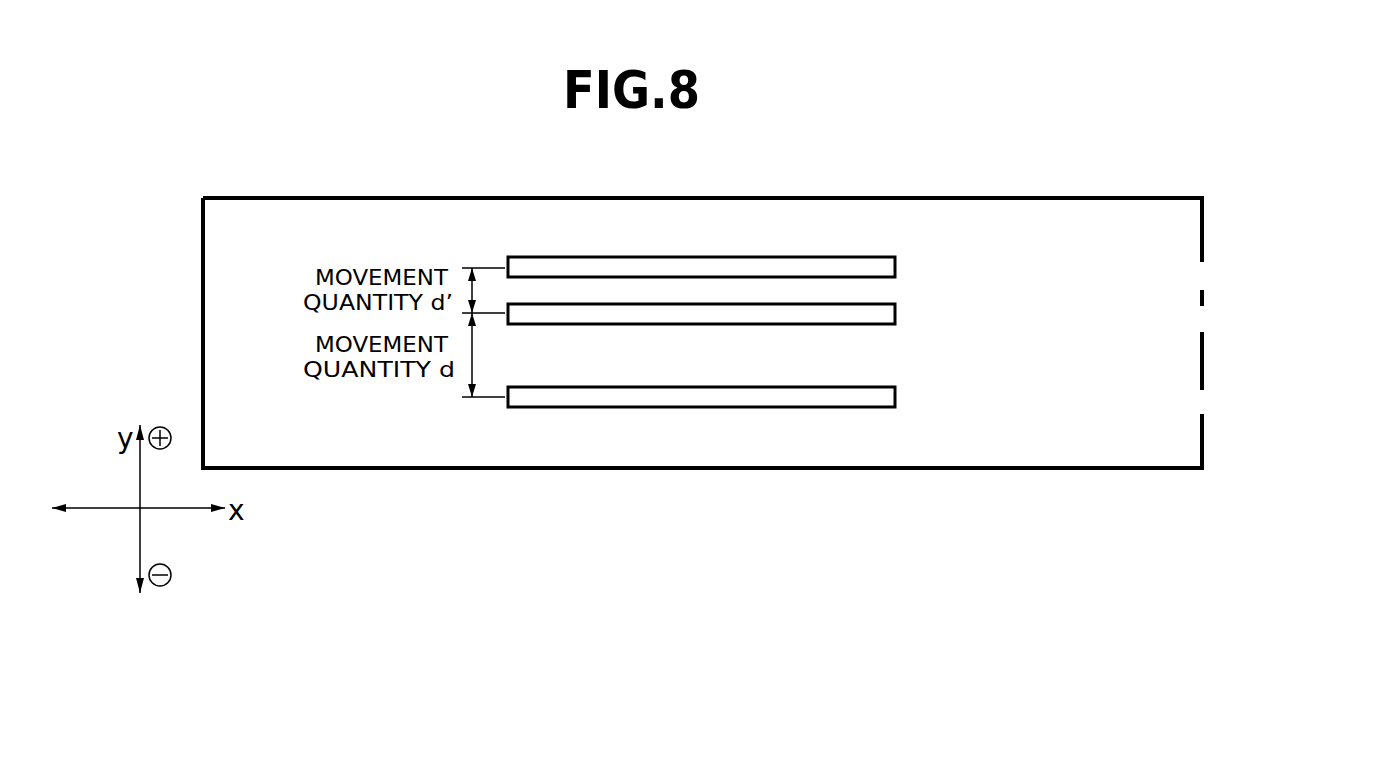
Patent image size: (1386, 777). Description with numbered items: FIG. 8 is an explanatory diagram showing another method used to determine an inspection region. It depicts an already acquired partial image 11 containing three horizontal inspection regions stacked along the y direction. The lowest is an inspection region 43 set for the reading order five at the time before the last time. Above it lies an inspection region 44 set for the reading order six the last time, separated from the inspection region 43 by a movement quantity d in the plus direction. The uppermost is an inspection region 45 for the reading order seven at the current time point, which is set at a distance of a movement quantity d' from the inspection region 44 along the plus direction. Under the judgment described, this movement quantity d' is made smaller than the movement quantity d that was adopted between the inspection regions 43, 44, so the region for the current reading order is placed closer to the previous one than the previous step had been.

The already acquired partial image 11 is at (463, 197).
The inspection region 43 is at (896, 397).
The inspection region 44 is at (896, 314).
The inspection region 45 is at (896, 268).